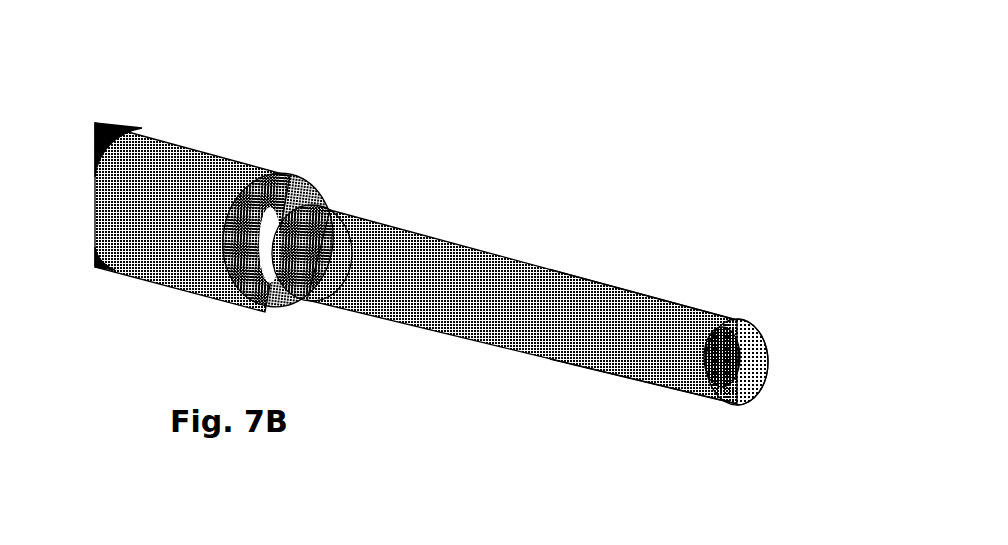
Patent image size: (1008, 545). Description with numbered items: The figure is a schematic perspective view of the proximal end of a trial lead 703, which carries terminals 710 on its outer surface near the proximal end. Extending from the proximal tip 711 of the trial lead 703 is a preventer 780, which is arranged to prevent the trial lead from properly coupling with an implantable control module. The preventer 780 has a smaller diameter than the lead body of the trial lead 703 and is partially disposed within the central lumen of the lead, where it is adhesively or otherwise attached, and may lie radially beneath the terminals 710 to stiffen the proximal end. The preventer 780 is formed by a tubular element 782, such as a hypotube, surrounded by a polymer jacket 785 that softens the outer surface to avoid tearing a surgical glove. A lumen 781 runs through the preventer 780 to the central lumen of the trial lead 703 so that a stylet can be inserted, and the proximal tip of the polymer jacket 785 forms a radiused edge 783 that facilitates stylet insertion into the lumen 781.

The terminals 710 is at (110, 133).
The trial lead 703 is at (202, 153).
The proximal tip 711 is at (340, 185).
The preventer 780 is at (482, 252).
The polymer jacket 785 is at (613, 290).
The radiused edge 783 is at (750, 338).
The tubular element 782 is at (723, 366).
The lumen 781 is at (767, 392).